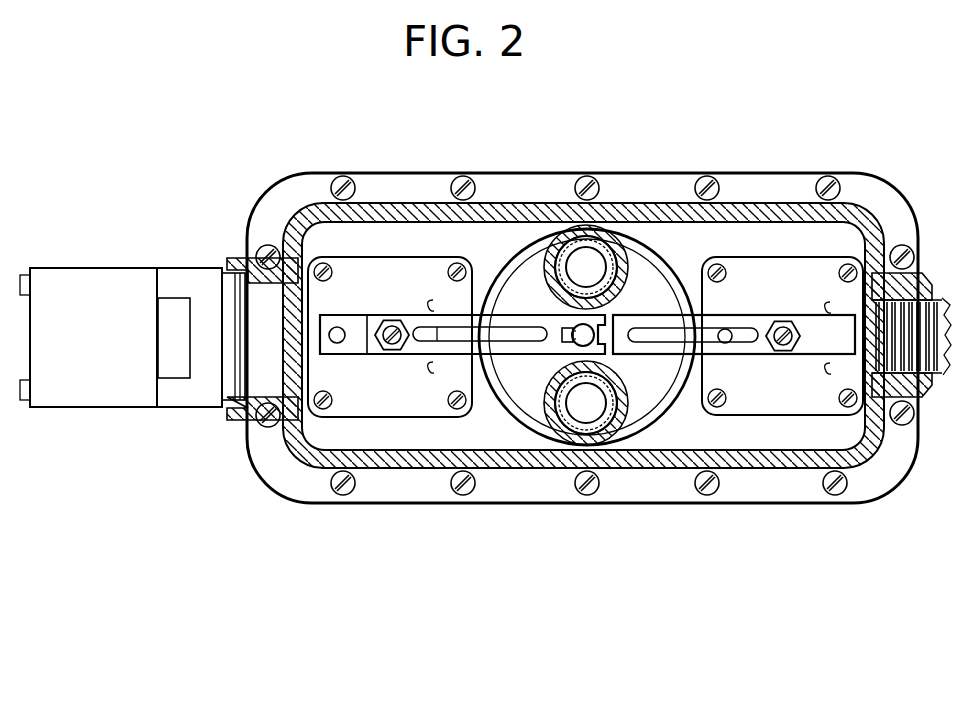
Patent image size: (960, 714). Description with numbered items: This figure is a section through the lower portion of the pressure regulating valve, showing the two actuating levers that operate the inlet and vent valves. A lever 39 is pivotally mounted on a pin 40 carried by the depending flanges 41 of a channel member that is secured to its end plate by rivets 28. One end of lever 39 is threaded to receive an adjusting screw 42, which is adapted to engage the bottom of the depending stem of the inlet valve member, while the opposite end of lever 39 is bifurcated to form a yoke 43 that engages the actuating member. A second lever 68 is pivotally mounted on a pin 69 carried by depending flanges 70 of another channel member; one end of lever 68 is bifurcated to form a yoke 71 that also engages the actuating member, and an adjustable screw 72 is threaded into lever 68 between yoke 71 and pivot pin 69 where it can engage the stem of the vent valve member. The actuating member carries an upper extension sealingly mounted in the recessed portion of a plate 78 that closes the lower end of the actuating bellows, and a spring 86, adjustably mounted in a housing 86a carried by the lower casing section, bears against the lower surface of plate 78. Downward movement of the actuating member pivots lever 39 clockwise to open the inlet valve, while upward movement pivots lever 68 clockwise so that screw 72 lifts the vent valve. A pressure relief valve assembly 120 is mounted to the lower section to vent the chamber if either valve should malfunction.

The pressure relief valve assembly 120 is at (110, 263).
The rivets 28 is at (337, 344).
The lever 39 is at (447, 320).
The pin 40 is at (430, 367).
The depending flanges 41 is at (374, 312).
The adjusting screw 42 is at (393, 324).
The yoke 43 is at (562, 322).
The lever 68 is at (667, 355).
The pin 69 is at (821, 368).
The depending flanges 70 is at (777, 316).
The yoke 71 is at (601, 348).
The adjustable screw 72 is at (798, 338).
The plate 78 is at (645, 276).
The spring 86 is at (608, 256).
The housing 86a is at (612, 293).